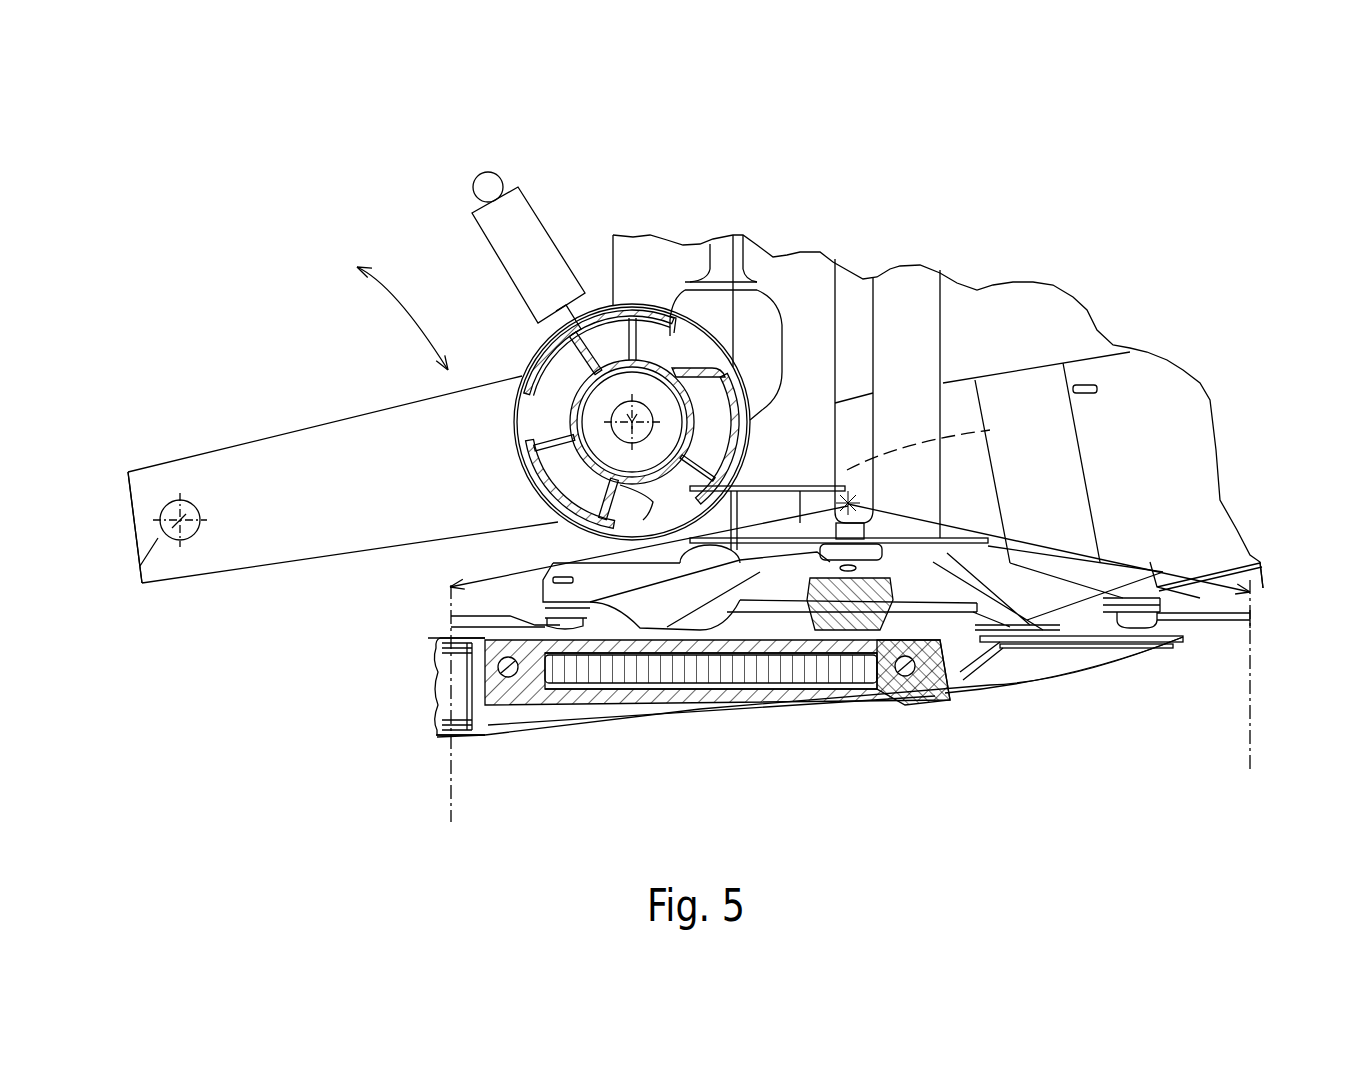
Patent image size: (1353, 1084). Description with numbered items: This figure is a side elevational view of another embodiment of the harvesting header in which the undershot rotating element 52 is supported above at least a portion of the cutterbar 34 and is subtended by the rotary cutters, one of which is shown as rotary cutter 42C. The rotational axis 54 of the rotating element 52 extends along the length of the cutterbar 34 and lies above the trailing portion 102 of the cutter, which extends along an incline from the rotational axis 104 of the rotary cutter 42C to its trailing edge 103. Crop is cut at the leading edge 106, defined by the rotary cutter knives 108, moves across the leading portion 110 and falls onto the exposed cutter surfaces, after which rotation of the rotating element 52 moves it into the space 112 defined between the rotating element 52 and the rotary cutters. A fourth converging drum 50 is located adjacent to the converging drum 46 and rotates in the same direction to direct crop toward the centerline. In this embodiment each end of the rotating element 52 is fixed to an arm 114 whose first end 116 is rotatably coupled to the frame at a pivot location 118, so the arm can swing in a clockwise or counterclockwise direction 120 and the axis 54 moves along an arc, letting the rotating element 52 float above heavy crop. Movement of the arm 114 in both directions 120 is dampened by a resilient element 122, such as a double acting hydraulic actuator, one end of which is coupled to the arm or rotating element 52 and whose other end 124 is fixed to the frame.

The cutterbar 34 is at (1023, 657).
The rotary cutter 42C is at (660, 593).
The converging drum 46 is at (927, 306).
The fourth converging drum 50 is at (797, 277).
The undershot rotating element 52 is at (626, 318).
The rotational axis 54 is at (527, 377).
The trailing portion 102 is at (510, 577).
The trailing edge 103 is at (450, 797).
The rotational axis 104 is at (994, 432).
The leading edge 106 is at (1250, 740).
The rotary cutter knives 108 is at (1253, 620).
The leading portion 110 is at (1067, 550).
The space 112 is at (722, 519).
The arm 114 is at (286, 463).
The first end 116 is at (150, 486).
The pivot location 118 is at (136, 578).
The direction 120 is at (398, 300).
The resilient element 122 is at (537, 238).
The end 124 is at (488, 172).